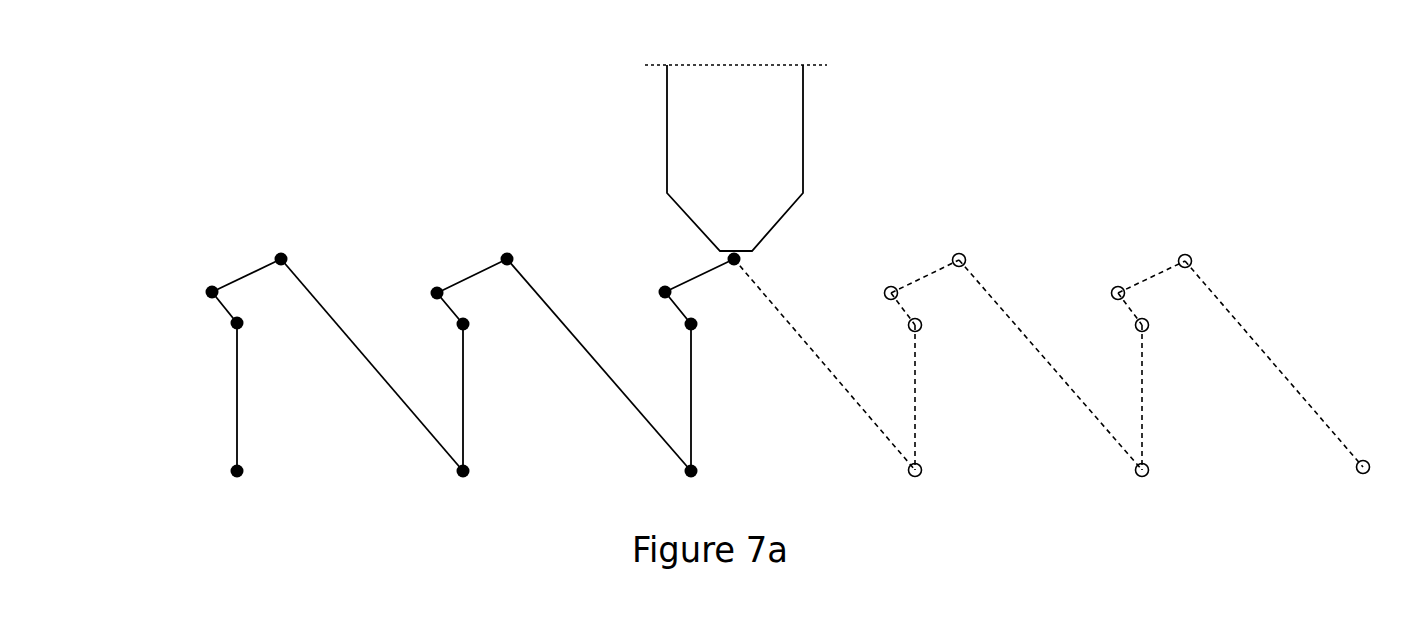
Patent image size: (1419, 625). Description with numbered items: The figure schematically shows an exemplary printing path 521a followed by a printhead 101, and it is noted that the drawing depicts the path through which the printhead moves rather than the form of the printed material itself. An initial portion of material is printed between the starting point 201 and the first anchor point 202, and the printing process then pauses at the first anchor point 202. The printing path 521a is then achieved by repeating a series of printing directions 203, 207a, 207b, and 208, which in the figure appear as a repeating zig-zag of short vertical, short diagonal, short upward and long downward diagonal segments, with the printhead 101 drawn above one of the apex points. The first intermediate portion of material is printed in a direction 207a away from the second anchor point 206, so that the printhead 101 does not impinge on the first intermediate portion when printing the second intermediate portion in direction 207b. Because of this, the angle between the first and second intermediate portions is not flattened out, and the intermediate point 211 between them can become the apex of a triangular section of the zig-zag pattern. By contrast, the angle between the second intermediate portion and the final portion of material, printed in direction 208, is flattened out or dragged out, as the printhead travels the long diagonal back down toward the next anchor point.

The printhead 101 is at (727, 105).
The starting point 201 is at (235, 473).
The first anchor point 202 is at (235, 327).
The printing direction 203 is at (235, 445).
The second anchor point 206 is at (467, 467).
The printing direction 207a is at (223, 308).
The printing direction 207b is at (238, 281).
The printing direction 208 is at (313, 294).
The intermediate point 211 is at (210, 290).
The printing path 521a is at (537, 297).